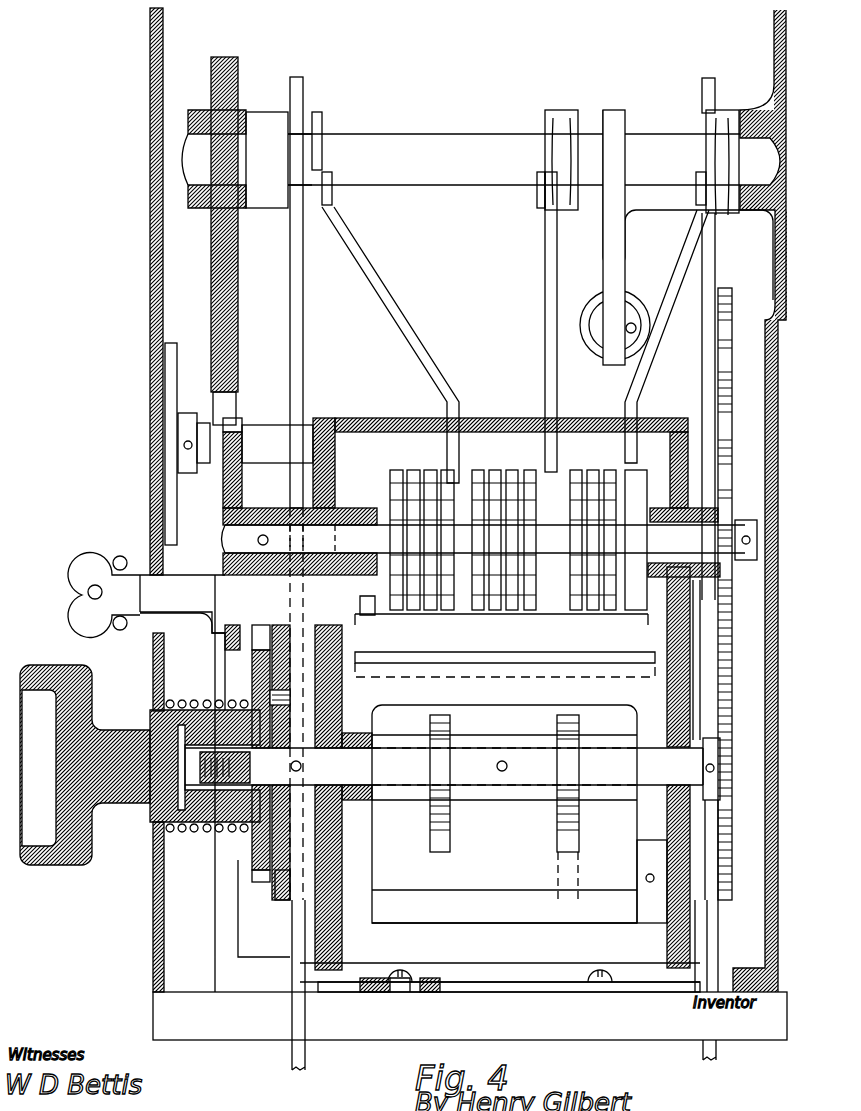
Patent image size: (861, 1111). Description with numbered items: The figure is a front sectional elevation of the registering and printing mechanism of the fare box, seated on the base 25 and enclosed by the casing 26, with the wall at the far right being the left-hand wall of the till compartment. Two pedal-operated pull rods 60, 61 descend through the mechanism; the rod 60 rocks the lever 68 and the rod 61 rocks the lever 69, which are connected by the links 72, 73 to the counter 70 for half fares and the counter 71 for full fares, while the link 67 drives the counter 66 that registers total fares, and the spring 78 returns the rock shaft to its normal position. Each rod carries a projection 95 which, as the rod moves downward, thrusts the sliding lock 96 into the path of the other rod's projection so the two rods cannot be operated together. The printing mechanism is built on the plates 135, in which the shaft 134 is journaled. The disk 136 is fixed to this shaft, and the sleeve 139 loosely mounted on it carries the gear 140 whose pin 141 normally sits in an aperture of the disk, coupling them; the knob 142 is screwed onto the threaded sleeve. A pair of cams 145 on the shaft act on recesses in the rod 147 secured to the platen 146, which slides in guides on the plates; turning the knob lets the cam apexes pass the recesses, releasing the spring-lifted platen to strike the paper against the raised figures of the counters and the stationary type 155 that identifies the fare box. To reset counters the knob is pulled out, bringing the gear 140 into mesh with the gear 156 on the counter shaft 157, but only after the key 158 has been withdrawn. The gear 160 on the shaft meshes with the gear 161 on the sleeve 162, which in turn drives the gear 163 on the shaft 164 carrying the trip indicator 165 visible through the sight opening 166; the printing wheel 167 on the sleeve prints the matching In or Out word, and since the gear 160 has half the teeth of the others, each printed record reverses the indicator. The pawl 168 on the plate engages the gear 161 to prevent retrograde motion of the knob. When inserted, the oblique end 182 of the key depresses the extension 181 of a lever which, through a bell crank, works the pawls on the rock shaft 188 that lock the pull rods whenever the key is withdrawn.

The base 25 is at (590, 1025).
The casing 26 is at (178, 450).
The pull rod 60 is at (303, 84).
The pull rod 61 is at (702, 87).
The counter 66 is at (505, 470).
The link 67 is at (545, 257).
The lever 68 is at (300, 212).
The lever 69 is at (718, 215).
The counter 70 is at (414, 470).
The counter 71 is at (594, 470).
The link 72 is at (393, 322).
The link 73 is at (650, 312).
The spring 78 is at (600, 340).
The projection 95 is at (300, 935).
The sliding lock 96 is at (487, 992).
The shaft 134 is at (610, 785).
The plates 135 is at (690, 676).
The disk 136 is at (252, 870).
The sleeve 139 is at (210, 712).
The gear 140 is at (260, 645).
The pin 141 is at (298, 700).
The knob 142 is at (64, 866).
The cams 145 is at (452, 830).
The platen 146 is at (590, 650).
The rod 147 is at (530, 890).
The stationary type 155 is at (372, 622).
The gear 156 is at (223, 492).
The counter shaft 157 is at (348, 525).
The key 158 is at (112, 568).
The gear 160 is at (728, 785).
The gear 161 is at (728, 620).
The sleeve 162 is at (727, 520).
The gear 163 is at (733, 310).
The shaft 164 is at (265, 425).
The trip indicator 165 is at (172, 343).
The sight opening 166 is at (150, 360).
The printing wheel 167 is at (637, 475).
The pawl 168 is at (728, 875).
The extension 181 is at (300, 640).
The oblique end 182 is at (372, 640).
The rock shaft 188 is at (455, 975).